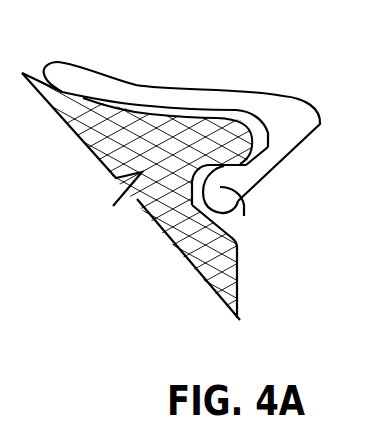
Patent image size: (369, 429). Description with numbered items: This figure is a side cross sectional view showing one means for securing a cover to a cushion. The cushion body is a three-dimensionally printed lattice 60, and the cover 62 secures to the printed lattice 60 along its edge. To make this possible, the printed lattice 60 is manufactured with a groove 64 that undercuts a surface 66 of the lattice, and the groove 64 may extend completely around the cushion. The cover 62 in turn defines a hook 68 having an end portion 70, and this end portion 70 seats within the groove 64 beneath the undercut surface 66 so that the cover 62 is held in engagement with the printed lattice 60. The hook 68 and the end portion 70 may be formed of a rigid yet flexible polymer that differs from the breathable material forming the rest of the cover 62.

The 3D printed lattice 60 is at (101, 143).
The cover 62 is at (127, 92).
The groove 64 is at (189, 190).
The surface 66 is at (84, 98).
The hook 68 is at (284, 133).
The end portion 70 is at (244, 216).